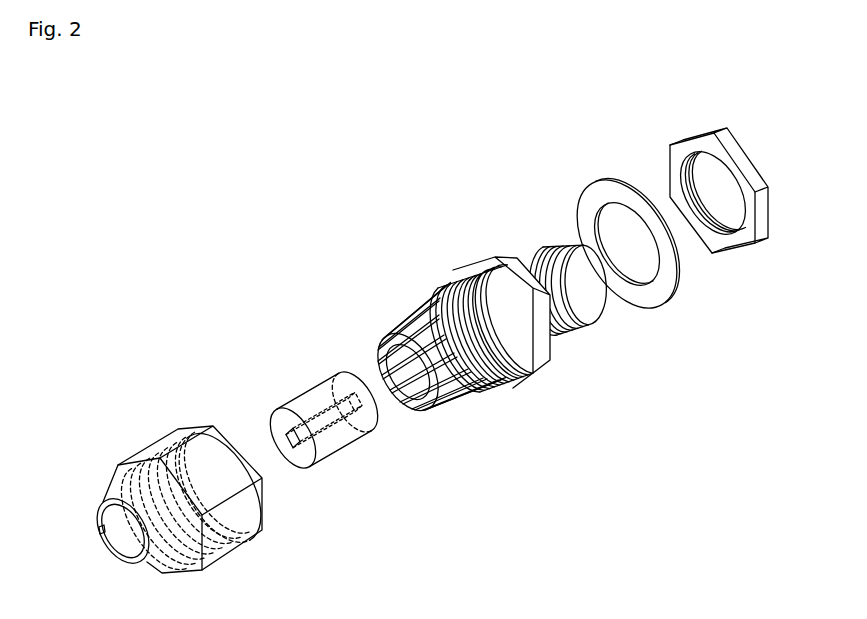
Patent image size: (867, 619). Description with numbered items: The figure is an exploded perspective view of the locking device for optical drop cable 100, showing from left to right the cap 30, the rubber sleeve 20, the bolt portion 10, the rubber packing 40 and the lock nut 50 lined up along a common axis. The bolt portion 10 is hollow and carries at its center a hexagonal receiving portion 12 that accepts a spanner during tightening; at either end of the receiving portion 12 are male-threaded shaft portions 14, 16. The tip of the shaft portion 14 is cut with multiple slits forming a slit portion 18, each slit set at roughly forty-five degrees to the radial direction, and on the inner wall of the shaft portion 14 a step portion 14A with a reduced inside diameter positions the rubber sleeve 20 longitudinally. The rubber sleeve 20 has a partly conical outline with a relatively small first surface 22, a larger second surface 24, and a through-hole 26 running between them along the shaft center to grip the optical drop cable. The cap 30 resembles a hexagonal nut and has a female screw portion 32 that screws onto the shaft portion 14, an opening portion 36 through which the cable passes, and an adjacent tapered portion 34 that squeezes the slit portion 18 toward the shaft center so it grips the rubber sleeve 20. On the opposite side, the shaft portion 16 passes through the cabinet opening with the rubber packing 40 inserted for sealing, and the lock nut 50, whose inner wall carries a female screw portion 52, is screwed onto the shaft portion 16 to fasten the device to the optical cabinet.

The locking device for optical drop cable 100 is at (653, 104).
The bolt portion 10 is at (423, 279).
The receiving portion 12 is at (468, 258).
The shaft portion 14 is at (506, 376).
The step portion 14A is at (486, 386).
The shaft portion 16 is at (536, 245).
The slit portion 18 is at (388, 330).
The rubber sleeve 20 is at (300, 365).
The first surface 22 is at (268, 412).
The second surface 24 is at (338, 370).
The through-hole 26 is at (289, 444).
The cap 30 is at (136, 434).
The female screw portion 32 is at (218, 552).
The tapered portion 34 is at (110, 486).
The opening portion 36 is at (102, 533).
The rubber packing 40 is at (578, 198).
The lock nut 50 is at (660, 146).
The female screw portion 52 is at (733, 238).